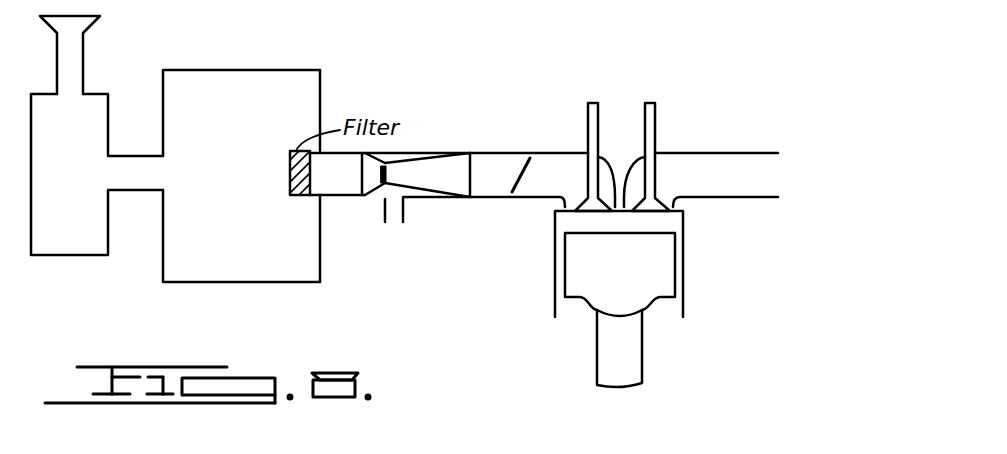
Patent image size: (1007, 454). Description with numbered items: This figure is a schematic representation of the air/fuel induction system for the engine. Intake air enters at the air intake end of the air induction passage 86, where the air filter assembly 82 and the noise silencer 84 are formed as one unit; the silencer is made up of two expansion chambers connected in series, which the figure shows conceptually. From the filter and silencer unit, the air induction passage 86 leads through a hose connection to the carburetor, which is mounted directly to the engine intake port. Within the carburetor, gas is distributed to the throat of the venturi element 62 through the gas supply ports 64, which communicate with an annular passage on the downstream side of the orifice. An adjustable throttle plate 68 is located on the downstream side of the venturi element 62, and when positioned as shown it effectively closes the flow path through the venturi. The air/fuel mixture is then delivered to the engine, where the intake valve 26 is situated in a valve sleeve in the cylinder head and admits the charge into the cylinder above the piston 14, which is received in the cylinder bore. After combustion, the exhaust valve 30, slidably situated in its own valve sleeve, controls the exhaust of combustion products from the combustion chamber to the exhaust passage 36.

The piston 14 is at (658, 225).
The intake valve 26 is at (598, 108).
The exhaust valve 30 is at (655, 117).
The exhaust passage 36 is at (673, 177).
The venturi element 62 is at (383, 187).
The gas supply ports 64 is at (388, 172).
The throttle plate 68 is at (515, 175).
The air filter assembly 82 is at (65, 207).
The noise silencer 84 is at (235, 97).
The air induction passage 86 is at (70, 50).